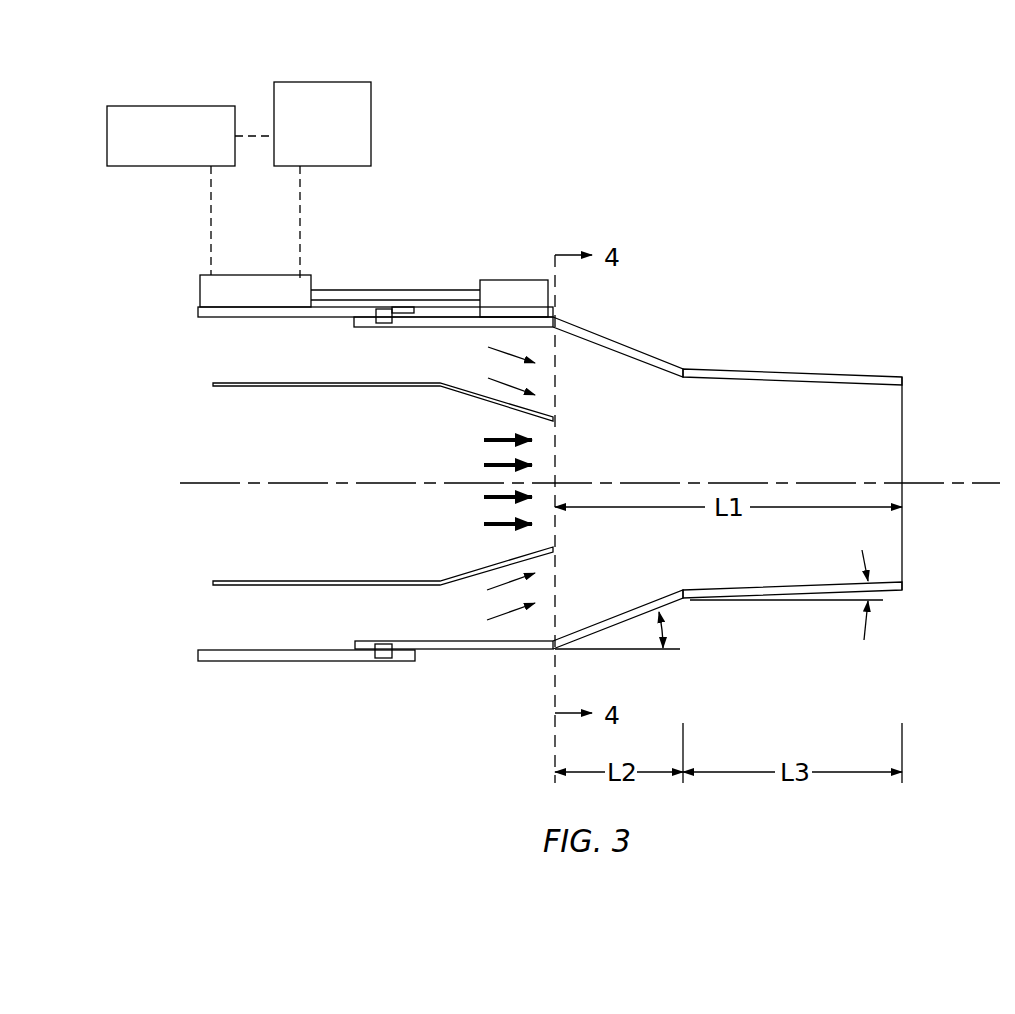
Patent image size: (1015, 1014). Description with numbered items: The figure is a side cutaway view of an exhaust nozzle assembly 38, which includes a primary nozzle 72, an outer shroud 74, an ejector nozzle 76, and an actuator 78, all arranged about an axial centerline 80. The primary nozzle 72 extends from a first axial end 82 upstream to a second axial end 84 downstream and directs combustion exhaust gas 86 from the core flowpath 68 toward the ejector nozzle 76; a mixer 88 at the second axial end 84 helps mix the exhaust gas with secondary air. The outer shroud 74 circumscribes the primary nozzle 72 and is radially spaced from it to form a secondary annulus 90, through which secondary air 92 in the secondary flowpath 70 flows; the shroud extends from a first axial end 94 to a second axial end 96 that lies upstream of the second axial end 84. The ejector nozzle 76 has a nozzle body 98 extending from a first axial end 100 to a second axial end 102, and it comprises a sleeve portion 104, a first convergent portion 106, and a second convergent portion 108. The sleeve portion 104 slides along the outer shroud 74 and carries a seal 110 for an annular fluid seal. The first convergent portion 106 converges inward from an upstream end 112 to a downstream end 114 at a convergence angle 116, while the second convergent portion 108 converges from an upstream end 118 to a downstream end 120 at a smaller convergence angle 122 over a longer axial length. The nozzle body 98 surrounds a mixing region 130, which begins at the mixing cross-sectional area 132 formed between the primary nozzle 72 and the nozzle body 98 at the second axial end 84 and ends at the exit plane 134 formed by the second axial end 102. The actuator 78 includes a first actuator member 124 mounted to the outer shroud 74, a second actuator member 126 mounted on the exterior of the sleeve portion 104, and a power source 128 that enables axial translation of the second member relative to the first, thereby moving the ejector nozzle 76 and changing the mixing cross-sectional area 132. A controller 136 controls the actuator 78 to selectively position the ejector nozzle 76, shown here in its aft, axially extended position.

The exhaust nozzle assembly 38 is at (889, 181).
The core flowpath 68 is at (281, 445).
The secondary flowpath 70 is at (351, 372).
The primary nozzle 72 is at (345, 590).
The outer shroud 74 is at (230, 665).
The ejector nozzle 76 is at (493, 655).
The actuator 78 is at (400, 275).
The axial centerline 80 is at (202, 486).
The first axial end of the primary nozzle 82 is at (213, 384).
The second axial end of the primary nozzle 84 is at (560, 418).
The combustion exhaust gas 86 is at (485, 498).
The mixer 88 is at (557, 565).
The secondary annulus 90 is at (437, 618).
The secondary air 92 is at (500, 362).
The first axial end of the outer shroud 94 is at (200, 308).
The second axial end of the outer shroud 96 is at (420, 308).
The nozzle body 98 is at (680, 600).
The first axial end of the ejector nozzle 100 is at (354, 325).
The second axial end of the ejector nozzle 102 is at (905, 380).
The sleeve portion 104 is at (530, 650).
The first convergent portion 106 is at (670, 369).
The second convergent portion 108 is at (860, 376).
The seal 110 is at (385, 308).
The upstream end of the first converging portion 112 is at (563, 322).
The downstream end of the first converging portion 114 is at (683, 379).
The convergence angle of the first converging portion 116 is at (670, 630).
The upstream end of the second converging portion 118 is at (705, 371).
The downstream end of the second converging portion 120 is at (905, 586).
The convergence angle of the second converging portion 122 is at (865, 628).
The first actuator member 124 is at (250, 275).
The second actuator member 126 is at (500, 280).
The power source 128 is at (371, 123).
The mixing region 130 is at (840, 448).
The mixing cross-sectional area 132 is at (560, 372).
The exit plane 134 is at (905, 543).
The controller 136 is at (172, 106).